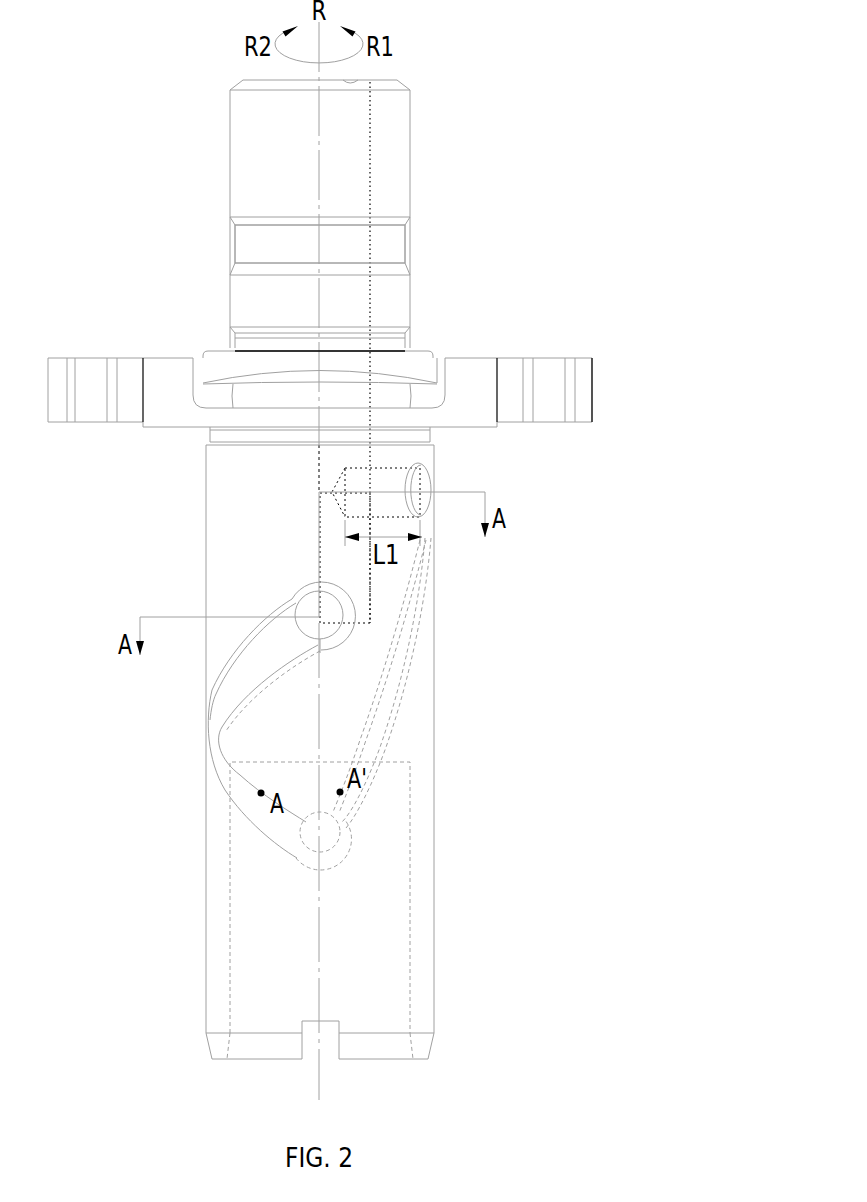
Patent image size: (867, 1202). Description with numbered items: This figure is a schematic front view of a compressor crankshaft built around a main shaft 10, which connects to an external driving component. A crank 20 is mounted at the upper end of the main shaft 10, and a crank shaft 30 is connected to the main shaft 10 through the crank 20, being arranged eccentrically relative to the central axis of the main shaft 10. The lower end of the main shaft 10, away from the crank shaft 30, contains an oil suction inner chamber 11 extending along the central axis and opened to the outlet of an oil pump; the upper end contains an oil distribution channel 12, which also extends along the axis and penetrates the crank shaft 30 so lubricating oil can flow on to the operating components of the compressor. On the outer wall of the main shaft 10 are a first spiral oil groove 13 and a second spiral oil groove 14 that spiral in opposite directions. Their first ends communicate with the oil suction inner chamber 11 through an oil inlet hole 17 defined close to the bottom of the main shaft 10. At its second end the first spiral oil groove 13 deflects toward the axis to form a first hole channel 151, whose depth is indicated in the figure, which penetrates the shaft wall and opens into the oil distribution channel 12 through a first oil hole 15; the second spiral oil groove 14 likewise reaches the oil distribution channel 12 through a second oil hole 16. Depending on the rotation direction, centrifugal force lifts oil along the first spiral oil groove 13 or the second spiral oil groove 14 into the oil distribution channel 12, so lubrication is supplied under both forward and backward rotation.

The main shaft 10 is at (430, 827).
The oil suction inner chamber 11 is at (388, 923).
The oil distribution channel 12 is at (349, 312).
The first spiral oil groove 13 is at (393, 700).
The second spiral oil groove 14 is at (224, 751).
The first oil hole 15 is at (358, 509).
The first hole channel 151 is at (392, 505).
The second oil hole 16 is at (312, 601).
The oil inlet hole 17 is at (310, 833).
The crank 20 is at (84, 385).
The crank shaft 30 is at (383, 192).